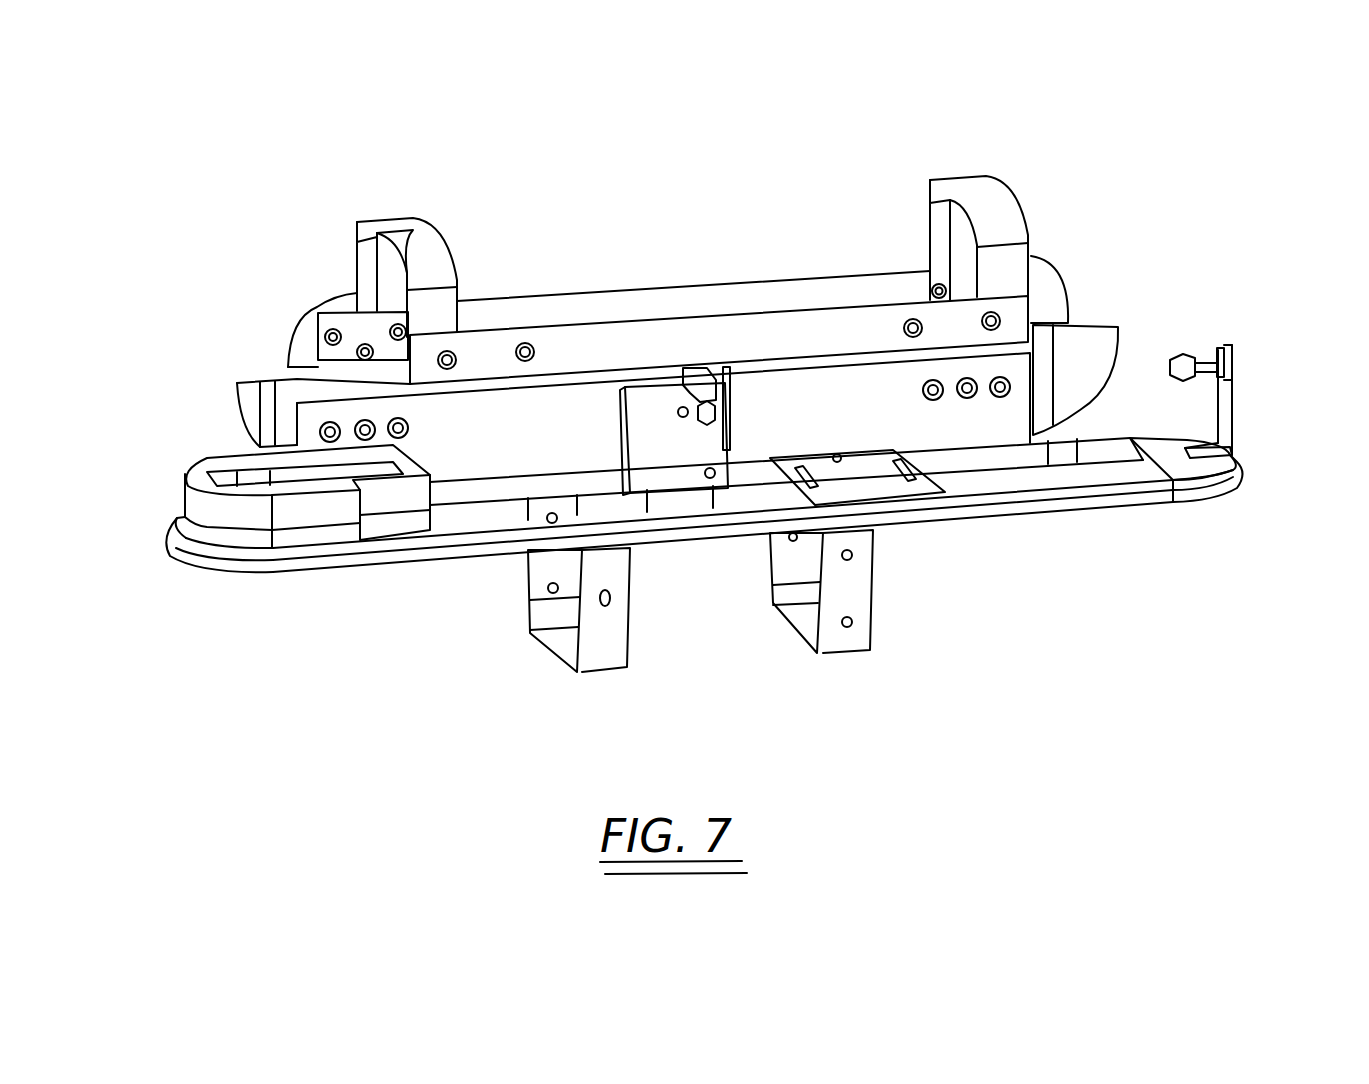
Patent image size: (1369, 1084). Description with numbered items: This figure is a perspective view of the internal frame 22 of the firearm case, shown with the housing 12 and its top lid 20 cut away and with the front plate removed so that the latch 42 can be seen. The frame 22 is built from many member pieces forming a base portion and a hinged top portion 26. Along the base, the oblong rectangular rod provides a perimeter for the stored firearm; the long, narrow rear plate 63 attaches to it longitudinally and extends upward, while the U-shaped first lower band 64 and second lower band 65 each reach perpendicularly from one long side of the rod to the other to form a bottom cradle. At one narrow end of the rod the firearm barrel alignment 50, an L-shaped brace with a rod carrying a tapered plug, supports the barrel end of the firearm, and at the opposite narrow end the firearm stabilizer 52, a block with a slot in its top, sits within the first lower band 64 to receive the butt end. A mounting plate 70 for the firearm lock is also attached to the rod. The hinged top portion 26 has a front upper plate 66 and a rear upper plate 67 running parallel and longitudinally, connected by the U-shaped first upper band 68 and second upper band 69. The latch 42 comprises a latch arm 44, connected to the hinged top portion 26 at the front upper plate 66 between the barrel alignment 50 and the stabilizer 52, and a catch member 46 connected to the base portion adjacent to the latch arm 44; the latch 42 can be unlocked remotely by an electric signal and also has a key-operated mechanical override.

The housing 12 is at (1110, 340).
The top lid 20 is at (1049, 278).
The frame 22 is at (258, 587).
The hinged top portion 26 is at (345, 240).
The latch 42 is at (622, 437).
The latch arm 44 is at (703, 375).
The catch member 46 is at (670, 477).
The firearm barrel alignment 50 is at (1238, 400).
The firearm stabilizer 52 is at (185, 475).
The rear plate 63 is at (317, 417).
The first lower band 64 is at (603, 658).
The second lower band 65 is at (860, 643).
The front upper plate 66 is at (492, 353).
The rear upper plate 67 is at (645, 302).
The first upper band 68 is at (400, 232).
The second upper band 69 is at (982, 186).
The mounting plate 70 is at (893, 478).